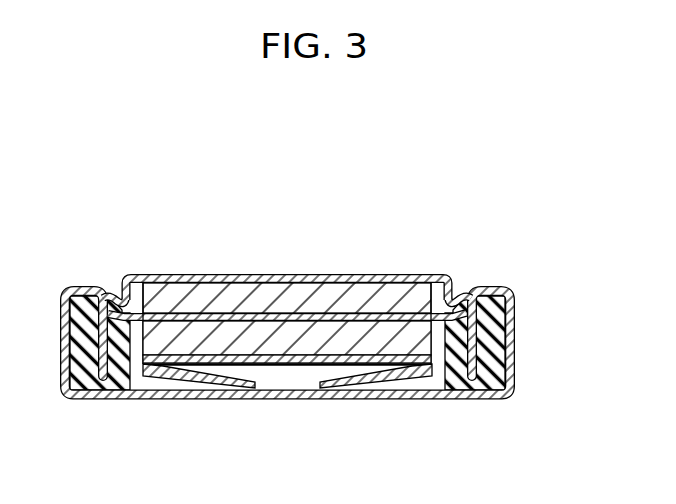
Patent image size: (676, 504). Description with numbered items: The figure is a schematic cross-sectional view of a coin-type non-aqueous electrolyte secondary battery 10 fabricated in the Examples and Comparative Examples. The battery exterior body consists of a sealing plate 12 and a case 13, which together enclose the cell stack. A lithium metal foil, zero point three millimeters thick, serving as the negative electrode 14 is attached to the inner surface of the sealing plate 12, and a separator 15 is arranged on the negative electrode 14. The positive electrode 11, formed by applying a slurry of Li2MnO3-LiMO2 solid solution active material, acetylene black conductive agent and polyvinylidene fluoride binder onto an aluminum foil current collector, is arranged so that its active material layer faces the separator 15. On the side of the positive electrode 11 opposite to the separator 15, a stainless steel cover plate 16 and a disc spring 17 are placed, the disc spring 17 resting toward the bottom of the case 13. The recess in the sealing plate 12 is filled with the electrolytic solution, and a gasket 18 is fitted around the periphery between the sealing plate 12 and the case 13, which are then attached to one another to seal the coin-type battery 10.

The coin-type non-aqueous electrolyte secondary battery 10 is at (487, 213).
The positive electrode 11 is at (313, 340).
The sealing plate 12 is at (241, 276).
The case 13 is at (413, 395).
The negative electrode 14 is at (352, 300).
The separator 15 is at (452, 290).
The cover plate 16 is at (265, 360).
The disc spring 17 is at (182, 380).
The gasket 18 is at (490, 335).